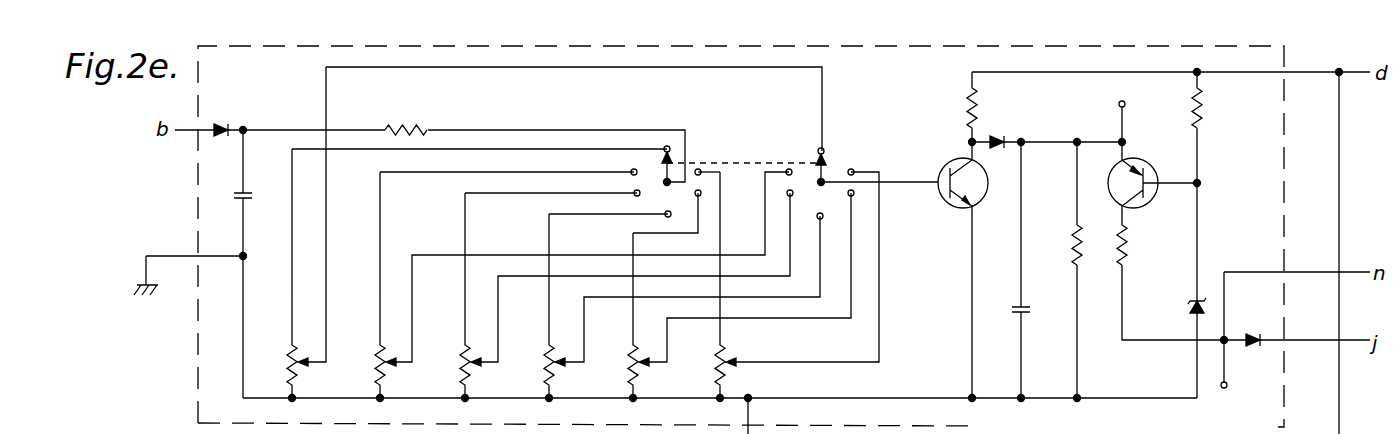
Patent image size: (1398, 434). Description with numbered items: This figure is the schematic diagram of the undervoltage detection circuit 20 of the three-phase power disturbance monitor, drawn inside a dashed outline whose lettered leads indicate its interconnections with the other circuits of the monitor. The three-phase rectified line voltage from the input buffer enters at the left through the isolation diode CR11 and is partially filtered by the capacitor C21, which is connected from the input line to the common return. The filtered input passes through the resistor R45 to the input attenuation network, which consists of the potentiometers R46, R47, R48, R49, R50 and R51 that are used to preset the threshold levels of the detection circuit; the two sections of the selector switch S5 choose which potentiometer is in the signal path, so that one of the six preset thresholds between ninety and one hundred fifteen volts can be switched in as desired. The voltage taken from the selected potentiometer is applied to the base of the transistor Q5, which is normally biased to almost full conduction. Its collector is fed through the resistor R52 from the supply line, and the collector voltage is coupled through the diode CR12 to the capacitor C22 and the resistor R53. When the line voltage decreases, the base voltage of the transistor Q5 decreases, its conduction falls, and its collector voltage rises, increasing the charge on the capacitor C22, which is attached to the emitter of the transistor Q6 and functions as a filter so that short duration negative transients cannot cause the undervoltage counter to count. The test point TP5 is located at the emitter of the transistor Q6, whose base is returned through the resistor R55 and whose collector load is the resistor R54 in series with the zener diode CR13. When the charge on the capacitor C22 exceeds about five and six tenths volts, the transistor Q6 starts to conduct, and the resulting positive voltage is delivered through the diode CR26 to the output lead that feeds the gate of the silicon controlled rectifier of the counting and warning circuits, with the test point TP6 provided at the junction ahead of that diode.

The undervoltage detection circuit 20 is at (198, 220).
The isolation diode CR11 is at (220, 121).
The resistor R45 is at (406, 114).
The capacitor C21 is at (257, 264).
The potentiometer R46 is at (280, 275).
The potentiometer R47 is at (368, 287).
The potentiometer R48 is at (453, 297).
The potentiometer R49 is at (537, 308).
The potentiometer R50 is at (621, 317).
The potentiometer R51 is at (708, 287).
The selector switch S5 is at (747, 178).
The transistor Q5 is at (971, 270).
The resistor R52 is at (954, 107).
The diode CR12 is at (1047, 132).
The capacitor C22 is at (1035, 270).
The resistor R53 is at (1052, 270).
The test point TP5 is at (1120, 122).
The transistor Q6 is at (1152, 191).
The resistor R54 is at (1170, 282).
The resistor R55 is at (1213, 127).
The zener diode CR13 is at (1169, 290).
The diode CR26 is at (1297, 331).
The test point TP6 is at (1239, 388).